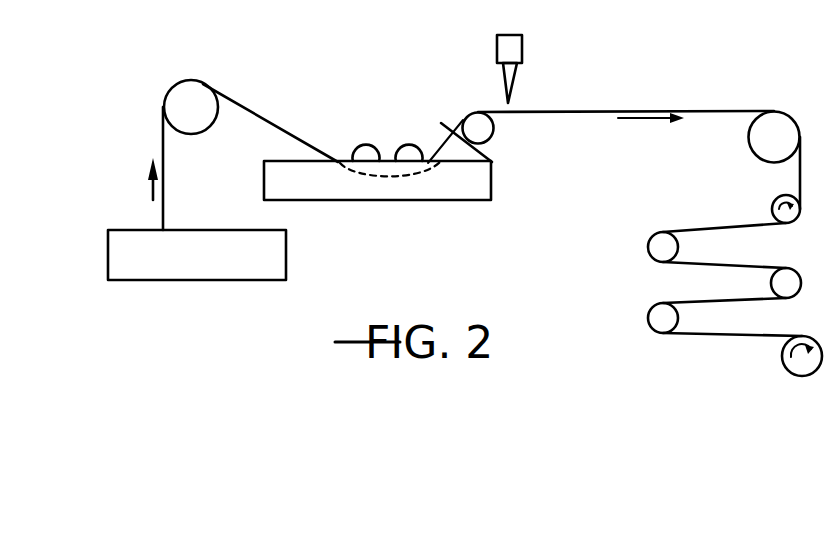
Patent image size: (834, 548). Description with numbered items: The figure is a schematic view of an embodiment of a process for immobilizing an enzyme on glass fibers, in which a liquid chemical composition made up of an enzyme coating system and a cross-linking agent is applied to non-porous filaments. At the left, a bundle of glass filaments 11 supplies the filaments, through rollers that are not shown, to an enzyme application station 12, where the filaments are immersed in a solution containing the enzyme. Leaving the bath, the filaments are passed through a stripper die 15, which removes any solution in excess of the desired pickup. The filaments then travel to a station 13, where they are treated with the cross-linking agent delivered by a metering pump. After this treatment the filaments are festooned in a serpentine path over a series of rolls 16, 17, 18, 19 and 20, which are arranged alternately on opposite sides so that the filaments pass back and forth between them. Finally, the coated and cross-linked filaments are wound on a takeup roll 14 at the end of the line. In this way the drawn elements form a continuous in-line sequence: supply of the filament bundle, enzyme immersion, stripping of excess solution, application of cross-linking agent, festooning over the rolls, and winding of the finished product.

The bundle of glass filaments 11 is at (286, 259).
The enzyme application station 12 is at (362, 128).
The station 13 is at (522, 40).
The takeup roll 14 is at (782, 356).
The stripper die 15 is at (441, 123).
The roll 16 is at (748, 145).
The roll 17 is at (774, 205).
The roll 18 is at (678, 247).
The roll 19 is at (771, 283).
The roll 20 is at (678, 318).